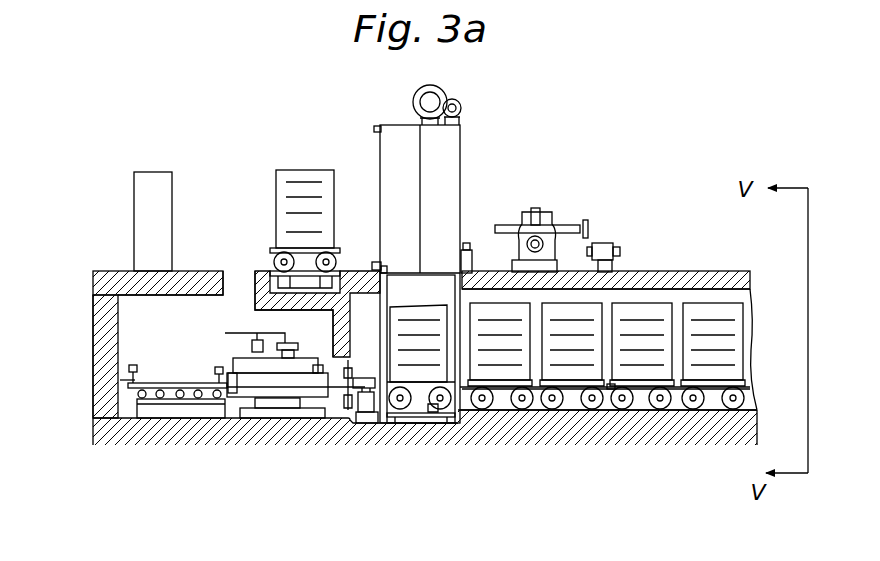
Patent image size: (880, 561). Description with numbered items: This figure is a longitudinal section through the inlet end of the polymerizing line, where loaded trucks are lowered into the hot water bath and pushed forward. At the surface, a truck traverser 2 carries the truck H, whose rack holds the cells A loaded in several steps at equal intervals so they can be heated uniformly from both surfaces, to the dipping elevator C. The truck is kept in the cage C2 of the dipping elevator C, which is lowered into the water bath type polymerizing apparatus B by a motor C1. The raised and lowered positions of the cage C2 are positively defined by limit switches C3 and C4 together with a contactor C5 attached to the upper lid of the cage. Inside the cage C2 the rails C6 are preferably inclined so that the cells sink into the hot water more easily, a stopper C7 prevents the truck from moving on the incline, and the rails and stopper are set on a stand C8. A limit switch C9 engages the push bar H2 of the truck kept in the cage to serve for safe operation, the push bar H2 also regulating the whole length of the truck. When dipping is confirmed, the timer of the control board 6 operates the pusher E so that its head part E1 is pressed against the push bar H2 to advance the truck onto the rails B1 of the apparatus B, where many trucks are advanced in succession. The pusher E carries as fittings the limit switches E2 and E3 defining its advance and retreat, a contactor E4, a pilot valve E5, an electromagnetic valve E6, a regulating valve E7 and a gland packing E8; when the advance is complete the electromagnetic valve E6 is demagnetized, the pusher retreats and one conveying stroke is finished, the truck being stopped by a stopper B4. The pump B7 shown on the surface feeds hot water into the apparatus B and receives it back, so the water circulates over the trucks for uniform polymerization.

The control board 6 is at (150, 177).
The truck traverser 2 is at (290, 265).
The dipping elevator C is at (445, 170).
The motor C1 is at (462, 105).
The cage C2 is at (421, 272).
The limit switch C3 is at (375, 127).
The limit switch C4 is at (373, 262).
The contactor C5 is at (385, 268).
The rails C6 is at (420, 415).
The stopper C7 is at (438, 408).
The stand C8 is at (395, 423).
The limit switch C9 is at (464, 243).
The water bath type polymerizing apparatus B is at (608, 296).
The rails B1 is at (558, 408).
The stopper B4 is at (486, 403).
The pump B7 is at (541, 212).
The cells A is at (710, 352).
The truck H is at (640, 388).
The push bar H2 is at (612, 390).
The pusher E is at (285, 387).
The head part E1 is at (368, 395).
The limit switch E2 is at (214, 367).
The limit switch E3 is at (131, 364).
The contactor E4 is at (130, 383).
The pilot valve E5 is at (290, 345).
The electromagnetic valve E6 is at (251, 341).
The regulating valve E7 is at (225, 392).
The gland packing E8 is at (347, 390).